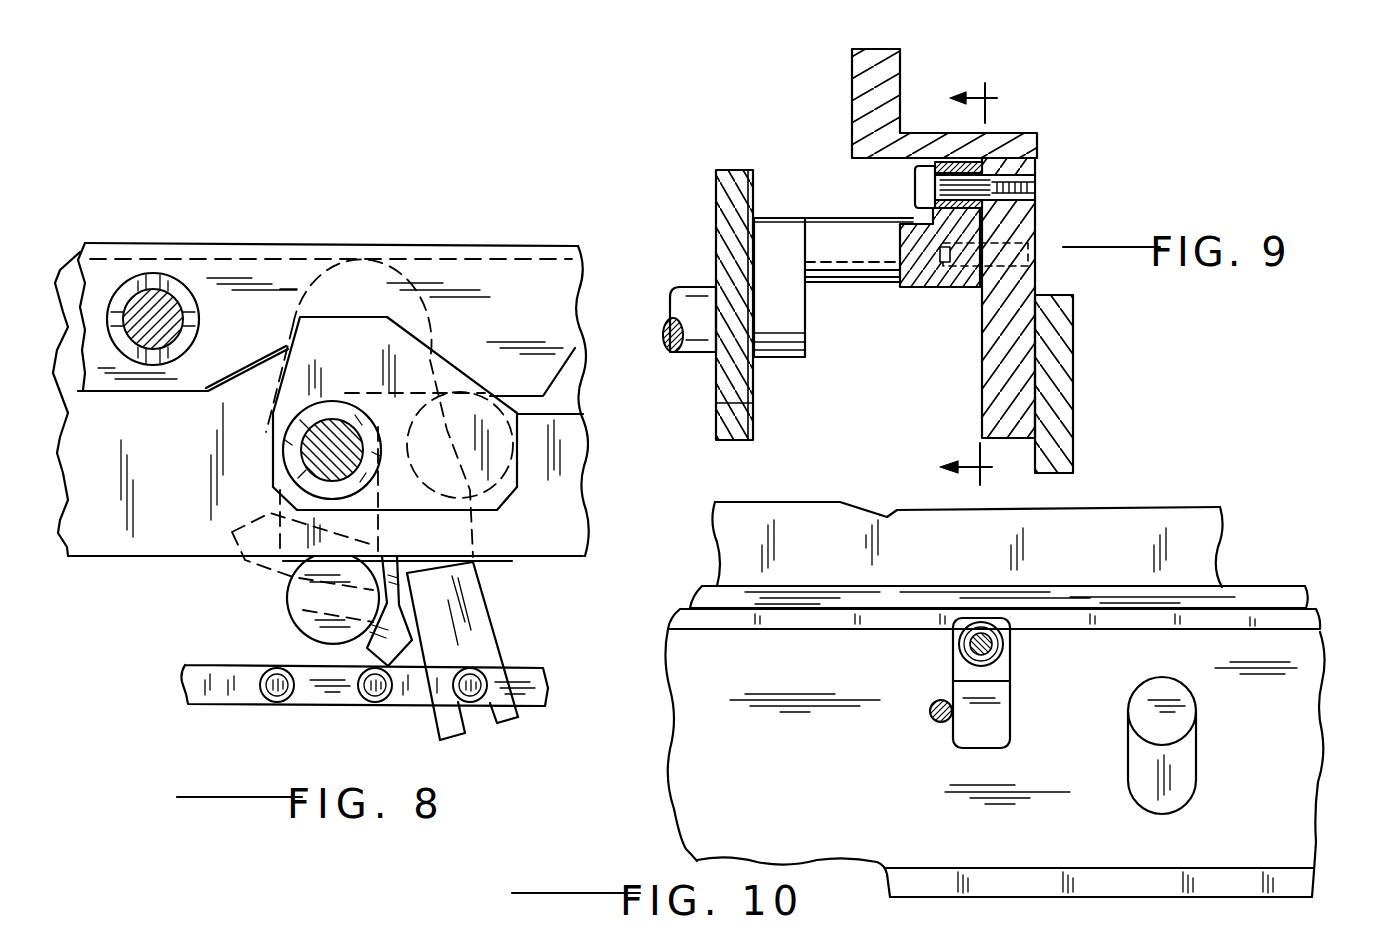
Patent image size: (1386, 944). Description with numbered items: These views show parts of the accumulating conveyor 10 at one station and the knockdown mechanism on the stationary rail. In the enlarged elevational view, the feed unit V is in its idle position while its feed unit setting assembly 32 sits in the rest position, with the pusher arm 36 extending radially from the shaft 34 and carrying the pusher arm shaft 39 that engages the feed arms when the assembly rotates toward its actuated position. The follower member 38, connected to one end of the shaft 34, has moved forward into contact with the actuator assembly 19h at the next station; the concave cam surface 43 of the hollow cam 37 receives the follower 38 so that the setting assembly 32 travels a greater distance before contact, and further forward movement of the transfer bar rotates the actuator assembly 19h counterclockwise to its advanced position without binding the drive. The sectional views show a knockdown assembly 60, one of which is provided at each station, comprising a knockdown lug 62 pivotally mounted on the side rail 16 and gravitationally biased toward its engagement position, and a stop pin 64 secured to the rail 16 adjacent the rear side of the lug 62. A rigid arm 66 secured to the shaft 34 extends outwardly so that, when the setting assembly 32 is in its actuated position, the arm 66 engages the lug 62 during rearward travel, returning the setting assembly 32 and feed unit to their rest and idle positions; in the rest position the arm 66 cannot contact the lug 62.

In FIG. 8, the feed unit V is at (463, 246).
In FIG. 8, the shaft 34 is at (332, 428).
In FIG. 9, the shaft 34 is at (692, 283).
In FIG. 8, the pusher arm shaft 39 is at (450, 383).
In FIG. 8, the pusher arm 36 is at (583, 414).
In FIG. 8, the feed unit setting assembly 32 is at (506, 522).
In FIG. 8, the follower member 38 is at (285, 625).
In FIG. 8, the concave cam surface 43 is at (378, 603).
In FIG. 8, the actuator assembly 19h is at (500, 617).
In FIG. 8, the hollow cam 37 is at (426, 707).
In FIG. 9, the rigid arm 66 is at (851, 217).
In FIG. 10, the rigid arm 66 is at (1197, 697).
In FIG. 9, the accumulating conveyor 10 is at (948, 272).
In FIG. 9, the rail 16 is at (1040, 172).
In FIG. 10, the rail 16 is at (1322, 634).
In FIG. 9, the knockdown lug 62 is at (915, 287).
In FIG. 10, the knockdown lug 62 is at (1010, 730).
In FIG. 9, the knockdown assembly 60 is at (890, 290).
In FIG. 9, the stop pin 64 is at (1030, 268).
In FIG. 10, the stop pin 64 is at (930, 716).